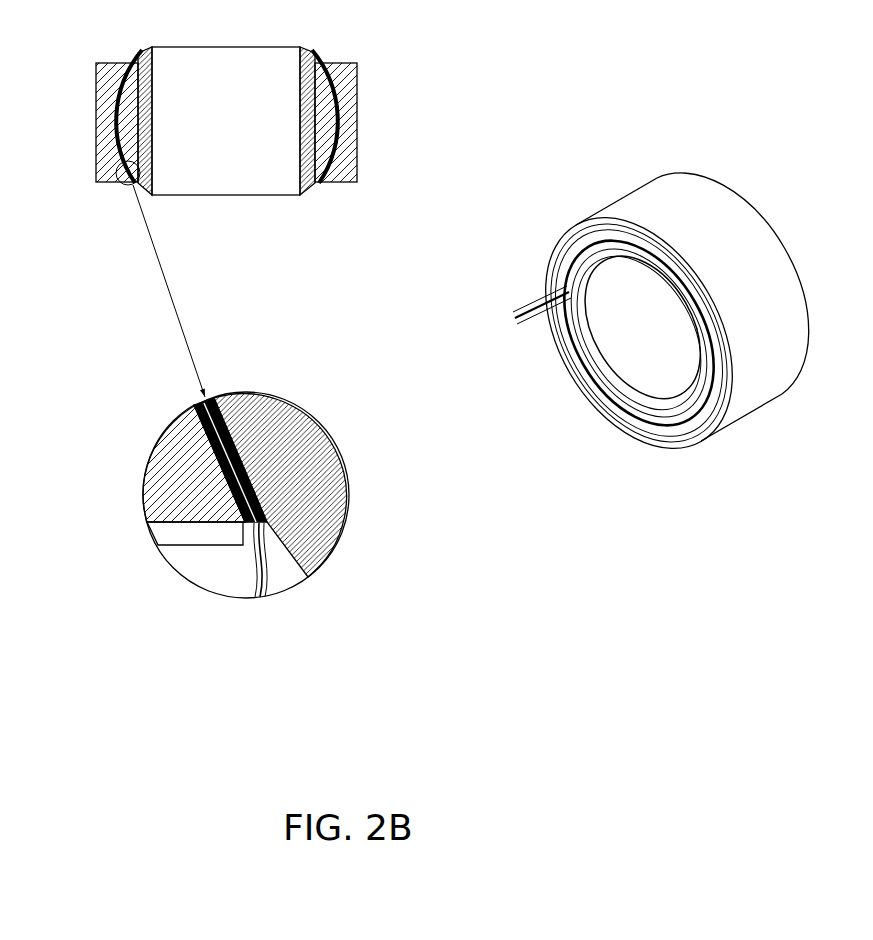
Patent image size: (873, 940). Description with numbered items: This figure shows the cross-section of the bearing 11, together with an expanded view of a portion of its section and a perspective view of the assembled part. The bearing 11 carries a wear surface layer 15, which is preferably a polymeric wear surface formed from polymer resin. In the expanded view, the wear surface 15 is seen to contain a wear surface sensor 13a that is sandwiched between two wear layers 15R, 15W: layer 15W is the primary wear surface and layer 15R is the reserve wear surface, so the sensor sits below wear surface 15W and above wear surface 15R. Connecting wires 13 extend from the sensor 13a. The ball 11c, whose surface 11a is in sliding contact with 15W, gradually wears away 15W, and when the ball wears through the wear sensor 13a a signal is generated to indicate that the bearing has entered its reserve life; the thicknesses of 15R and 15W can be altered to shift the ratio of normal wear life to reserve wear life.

The bearing 11 is at (228, 39).
The inner peripheral surface 11a is at (198, 489).
The ball 11c is at (604, 254).
The wire 13 is at (518, 310).
The wear surface sensor 13a is at (192, 397).
The wear surface layer 15 is at (115, 87).
The primary wear surface 15W is at (262, 499).
The reserve wear surface 15R is at (210, 520).